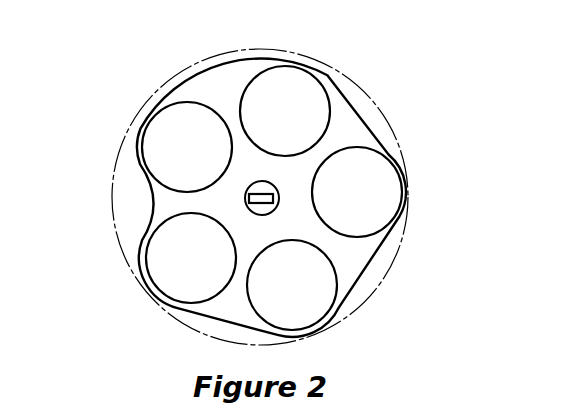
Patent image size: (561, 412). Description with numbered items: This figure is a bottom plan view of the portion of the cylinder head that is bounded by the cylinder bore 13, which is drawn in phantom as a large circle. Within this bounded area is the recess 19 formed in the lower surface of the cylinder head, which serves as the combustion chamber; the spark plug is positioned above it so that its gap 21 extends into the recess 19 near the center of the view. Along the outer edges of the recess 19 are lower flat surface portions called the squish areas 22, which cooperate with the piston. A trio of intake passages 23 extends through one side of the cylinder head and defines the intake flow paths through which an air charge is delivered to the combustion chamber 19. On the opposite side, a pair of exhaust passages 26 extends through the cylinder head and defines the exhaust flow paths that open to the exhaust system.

The cylinder bore 13 is at (113, 233).
The recess 19 is at (263, 173).
The gap 21 is at (278, 200).
The squish areas 22 is at (227, 55).
The intake passages 23 is at (328, 82).
The exhaust passages 26 is at (130, 136).